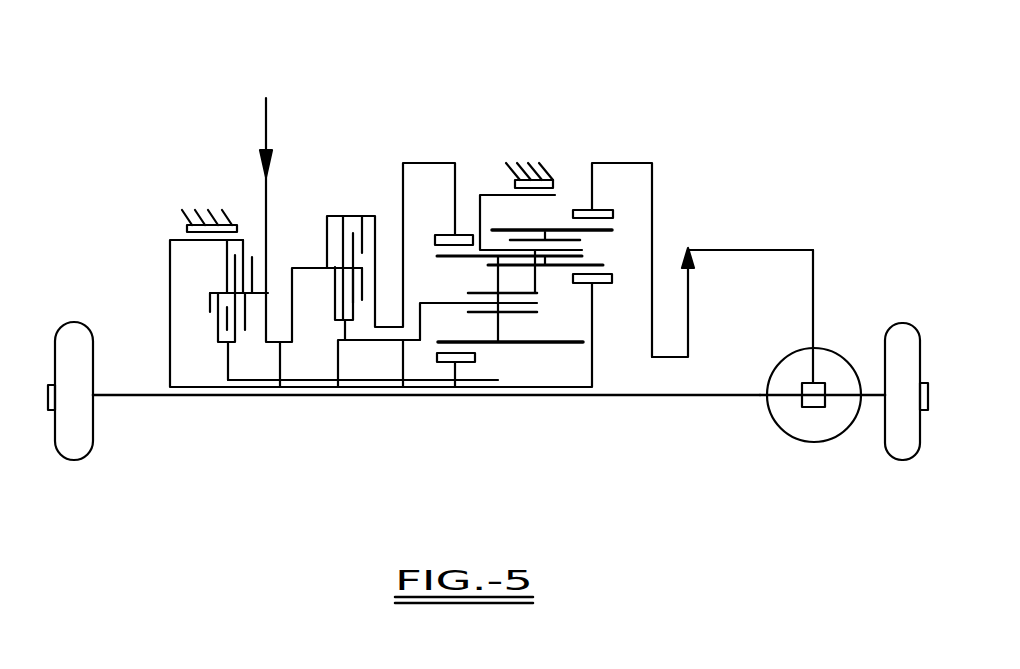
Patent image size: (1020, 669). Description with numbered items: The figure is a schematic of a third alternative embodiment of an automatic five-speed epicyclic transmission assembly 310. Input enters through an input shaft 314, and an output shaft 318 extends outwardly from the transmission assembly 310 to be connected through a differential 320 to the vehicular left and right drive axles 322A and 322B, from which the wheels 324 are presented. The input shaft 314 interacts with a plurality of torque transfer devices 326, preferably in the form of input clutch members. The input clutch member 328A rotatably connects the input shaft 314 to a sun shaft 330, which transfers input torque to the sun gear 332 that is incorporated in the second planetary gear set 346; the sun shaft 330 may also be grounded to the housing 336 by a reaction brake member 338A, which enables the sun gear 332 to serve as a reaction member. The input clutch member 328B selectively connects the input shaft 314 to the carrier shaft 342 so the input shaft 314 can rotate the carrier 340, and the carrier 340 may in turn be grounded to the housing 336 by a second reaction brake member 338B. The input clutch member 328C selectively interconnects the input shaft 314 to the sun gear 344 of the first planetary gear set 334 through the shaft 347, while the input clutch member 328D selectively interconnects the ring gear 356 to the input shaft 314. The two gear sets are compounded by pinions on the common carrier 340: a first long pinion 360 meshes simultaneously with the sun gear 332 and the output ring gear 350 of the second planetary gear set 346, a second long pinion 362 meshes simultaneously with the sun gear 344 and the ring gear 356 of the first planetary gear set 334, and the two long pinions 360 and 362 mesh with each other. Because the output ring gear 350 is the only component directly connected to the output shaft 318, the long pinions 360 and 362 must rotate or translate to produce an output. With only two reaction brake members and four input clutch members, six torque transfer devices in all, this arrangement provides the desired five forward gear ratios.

The epicyclic transmission assembly 310 is at (504, 100).
The input shaft 314 is at (280, 392).
The output shaft 318 is at (798, 250).
The differential 320 is at (818, 442).
The left drive axle 322A is at (155, 397).
The right drive axle 322B is at (870, 396).
The wheels 324 is at (92, 447).
The torque transfer devices 326 is at (340, 150).
The input clutch member 328A is at (225, 258).
The input clutch member 328B is at (336, 303).
The input clutch member 328C is at (218, 312).
The input clutch member 328D is at (343, 233).
The sun shaft 330 is at (528, 396).
The sun gear 332 is at (612, 283).
The first planetary gear set 334 is at (469, 170).
The housing 336 is at (207, 205).
The reaction brake member 338A is at (187, 228).
The reaction brake member 338B is at (558, 180).
The carrier 340 is at (537, 293).
The carrier shaft 342 is at (405, 390).
The sun gear 344 is at (474, 362).
The second planetary gear set 346 is at (580, 170).
The shaft 347 is at (340, 390).
The output ring gear 350 is at (613, 213).
The ring gear 356 is at (442, 235).
The first long pinion 360 is at (606, 236).
The second long pinion 362 is at (530, 344).